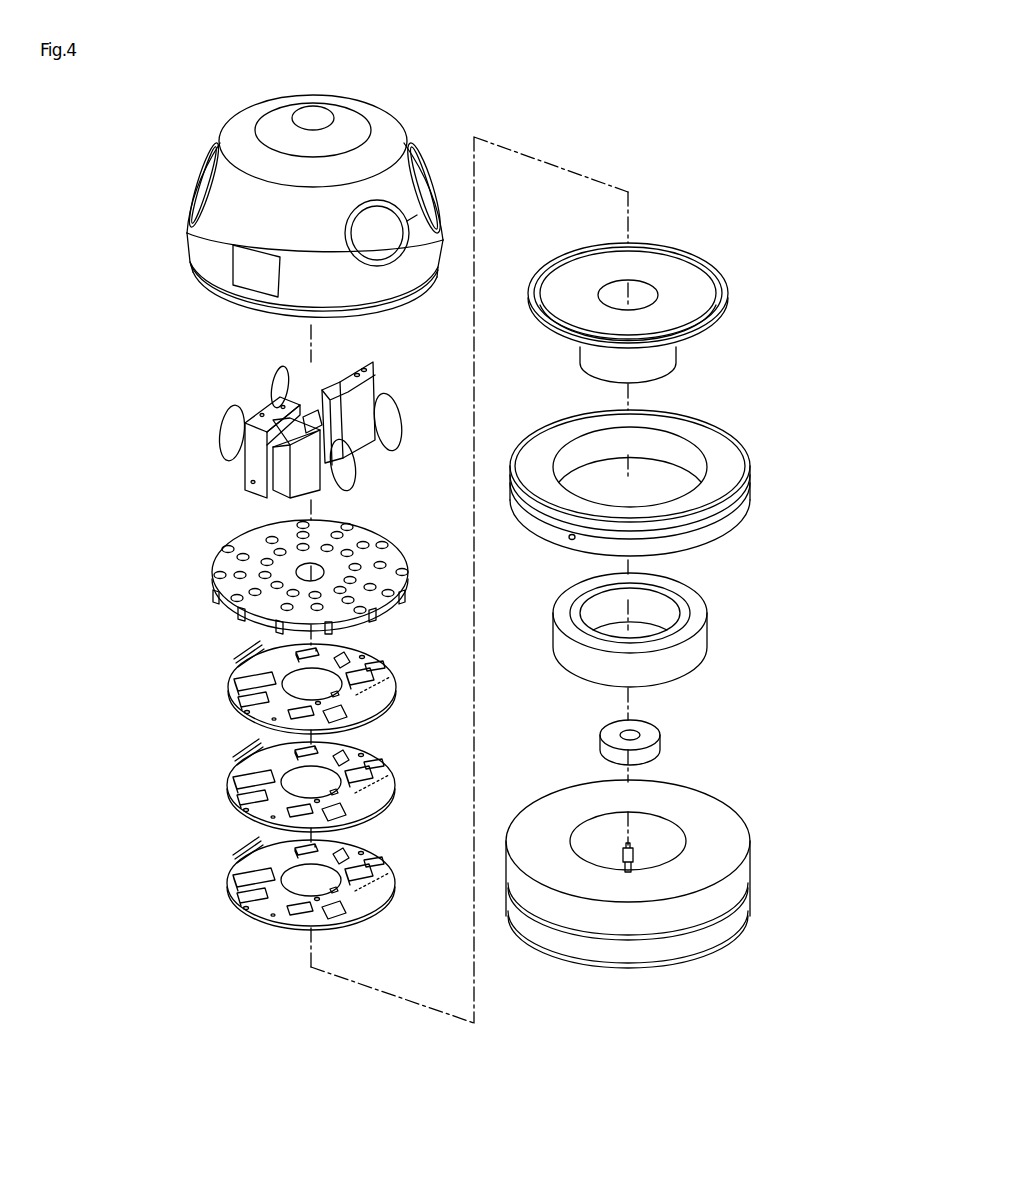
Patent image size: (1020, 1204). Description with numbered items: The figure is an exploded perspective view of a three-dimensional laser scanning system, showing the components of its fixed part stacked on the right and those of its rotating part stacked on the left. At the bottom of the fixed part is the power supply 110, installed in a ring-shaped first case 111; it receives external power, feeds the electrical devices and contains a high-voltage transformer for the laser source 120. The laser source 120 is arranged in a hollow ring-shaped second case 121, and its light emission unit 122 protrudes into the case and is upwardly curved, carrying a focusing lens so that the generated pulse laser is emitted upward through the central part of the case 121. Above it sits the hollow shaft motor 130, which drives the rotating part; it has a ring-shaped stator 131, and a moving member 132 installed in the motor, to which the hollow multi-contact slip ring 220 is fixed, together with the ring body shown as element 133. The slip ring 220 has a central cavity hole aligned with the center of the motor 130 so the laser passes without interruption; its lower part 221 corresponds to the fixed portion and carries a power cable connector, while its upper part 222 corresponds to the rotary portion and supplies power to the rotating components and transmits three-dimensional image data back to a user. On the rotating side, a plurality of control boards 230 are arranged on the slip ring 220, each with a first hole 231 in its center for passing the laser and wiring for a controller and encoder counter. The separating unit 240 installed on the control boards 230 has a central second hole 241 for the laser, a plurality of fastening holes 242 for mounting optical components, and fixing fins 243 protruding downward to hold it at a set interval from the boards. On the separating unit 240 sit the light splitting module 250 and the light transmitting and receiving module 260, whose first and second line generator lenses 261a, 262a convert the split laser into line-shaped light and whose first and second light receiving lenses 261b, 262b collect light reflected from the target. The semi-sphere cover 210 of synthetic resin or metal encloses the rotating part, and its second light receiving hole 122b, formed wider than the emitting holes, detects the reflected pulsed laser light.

The power supply 110 is at (675, 934).
The first case 111 is at (744, 910).
The laser source 120 is at (674, 894).
The second case 121 is at (744, 872).
The light emission unit 122 is at (626, 866).
The second light receiving hole 122b is at (212, 192).
The hollow shaft motor 130 is at (684, 483).
The stator 131 is at (742, 526).
The moving member 132 is at (684, 610).
The ring body 133 is at (679, 630).
The cover 210 is at (276, 210).
The hollow multi-contact slip ring 220 is at (679, 313).
The lower part 221 is at (658, 736).
The upper part 222 is at (674, 356).
The control board 230 is at (270, 800).
The first hole 231 is at (305, 898).
The separating unit 240 is at (275, 581).
The second hole 241 is at (318, 570).
The fastening holes 242 is at (247, 555).
The fixing fins 243 is at (278, 626).
The light splitting module 250 is at (209, 417).
The light transmitting and receiving module 260 is at (432, 408).
The first line generator lens 261a is at (348, 467).
The first light receiving lens 261b is at (398, 408).
The second line generator lens 262a is at (277, 388).
The second light receiving lens 262b is at (224, 440).